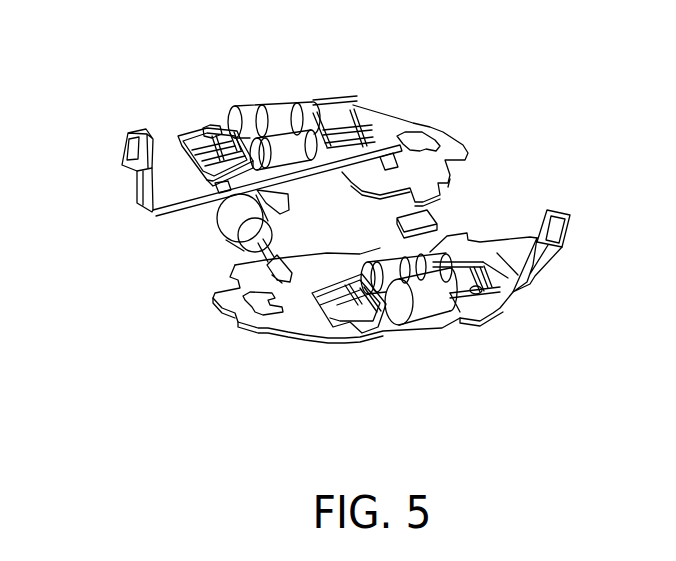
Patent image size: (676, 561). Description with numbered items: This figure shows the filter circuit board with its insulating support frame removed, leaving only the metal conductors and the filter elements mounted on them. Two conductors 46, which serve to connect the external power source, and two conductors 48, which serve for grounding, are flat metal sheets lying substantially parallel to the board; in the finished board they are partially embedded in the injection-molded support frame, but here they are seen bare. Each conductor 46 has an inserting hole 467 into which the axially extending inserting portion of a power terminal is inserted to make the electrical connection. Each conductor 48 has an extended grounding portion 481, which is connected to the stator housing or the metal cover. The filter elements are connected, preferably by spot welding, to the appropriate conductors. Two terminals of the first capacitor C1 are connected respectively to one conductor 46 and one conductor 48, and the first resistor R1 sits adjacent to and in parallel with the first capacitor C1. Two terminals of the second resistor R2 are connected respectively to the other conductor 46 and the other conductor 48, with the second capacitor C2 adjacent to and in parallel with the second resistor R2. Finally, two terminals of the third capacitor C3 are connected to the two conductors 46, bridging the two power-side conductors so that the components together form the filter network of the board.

The conductor 46 is at (387, 127).
The inserting hole 467 is at (425, 142).
The conductor 48 is at (172, 177).
The extended grounding portion 481 is at (133, 170).
The first capacitor C1 is at (419, 293).
The second capacitor C2 is at (267, 113).
The third capacitor C3 is at (225, 220).
The first resistor R1 is at (403, 270).
The second resistor R2 is at (293, 145).